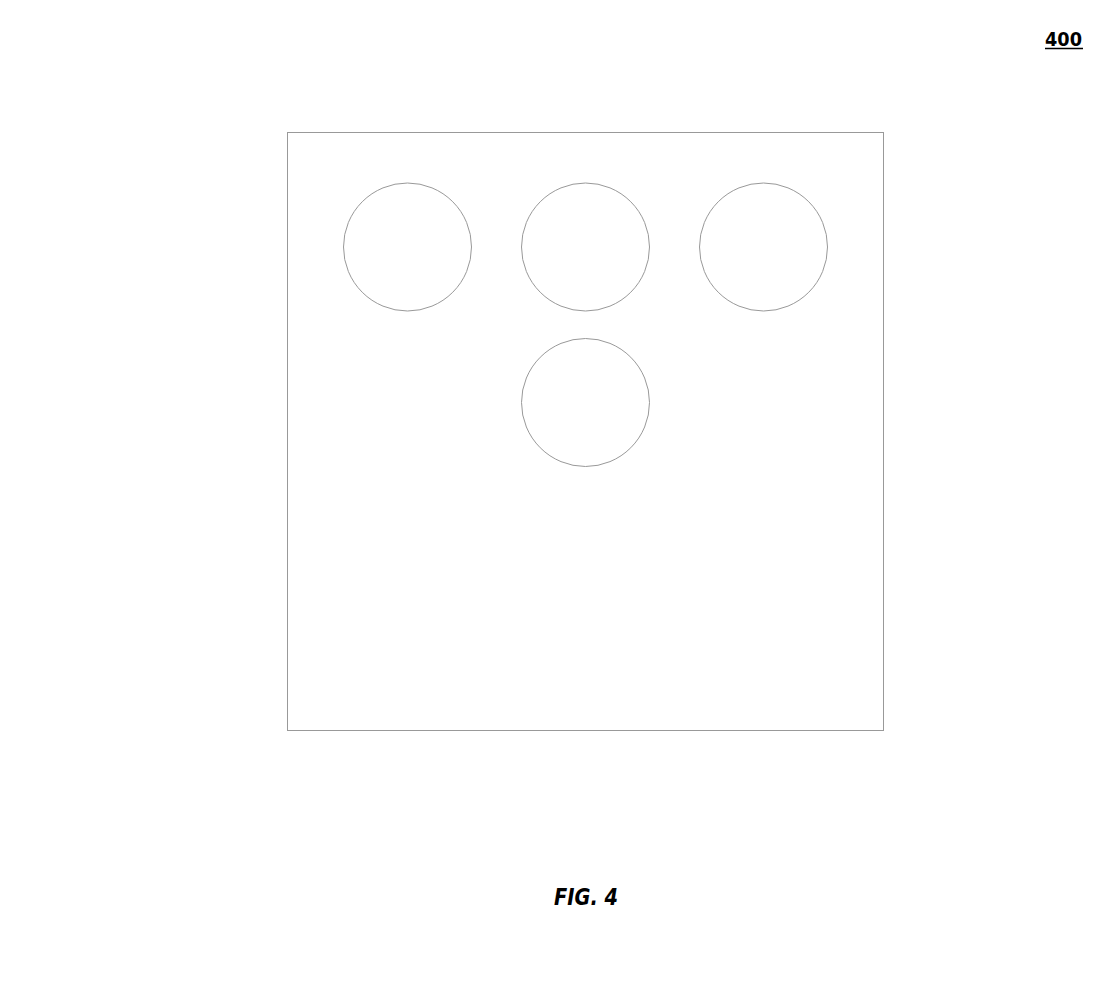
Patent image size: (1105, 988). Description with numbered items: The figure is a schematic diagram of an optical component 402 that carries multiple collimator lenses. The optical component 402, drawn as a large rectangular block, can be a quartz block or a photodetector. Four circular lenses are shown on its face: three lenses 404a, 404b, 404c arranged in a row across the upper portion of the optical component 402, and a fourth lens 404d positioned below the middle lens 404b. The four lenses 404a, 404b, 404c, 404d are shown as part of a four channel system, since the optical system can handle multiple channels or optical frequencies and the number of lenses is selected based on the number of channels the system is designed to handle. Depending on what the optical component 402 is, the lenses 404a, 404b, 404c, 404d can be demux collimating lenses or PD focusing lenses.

The optical component 402 is at (268, 166).
The collimator lens 404a is at (330, 282).
The collimator lens 404b is at (512, 291).
The collimator lens 404c is at (832, 294).
The collimator lens 404d is at (507, 440).